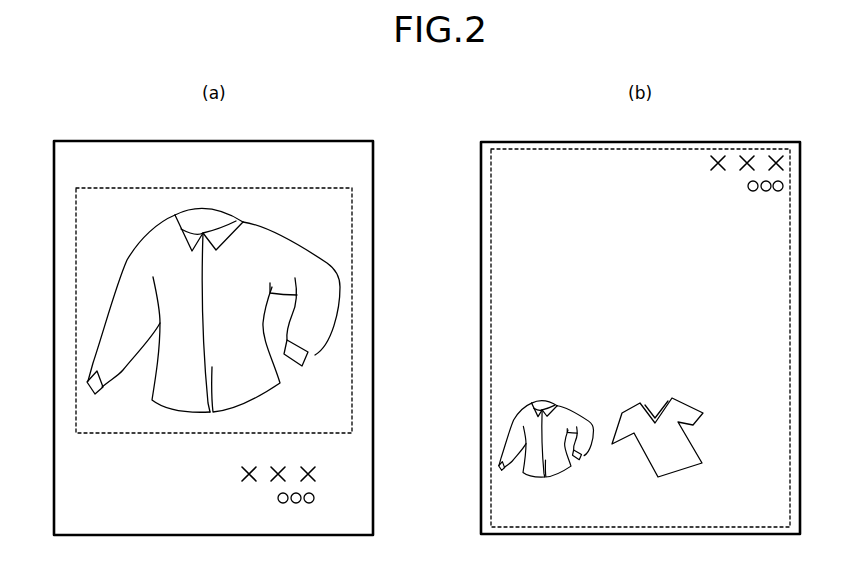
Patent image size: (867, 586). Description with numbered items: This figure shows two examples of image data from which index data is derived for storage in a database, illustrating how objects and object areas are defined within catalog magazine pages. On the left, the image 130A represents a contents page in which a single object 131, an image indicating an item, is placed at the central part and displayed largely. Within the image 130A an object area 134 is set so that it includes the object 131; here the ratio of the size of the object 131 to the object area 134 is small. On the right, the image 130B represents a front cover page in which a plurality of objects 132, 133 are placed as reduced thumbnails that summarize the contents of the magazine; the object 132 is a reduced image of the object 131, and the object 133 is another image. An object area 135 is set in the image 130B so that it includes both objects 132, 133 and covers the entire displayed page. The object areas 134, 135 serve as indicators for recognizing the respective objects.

The image of the contents page 130A is at (300, 126).
The image of the front cover page 130B is at (726, 126).
The object 131 is at (320, 262).
The object 132 is at (510, 427).
The object 133 is at (676, 478).
The object area 134 is at (353, 217).
The object area 135 is at (490, 340).